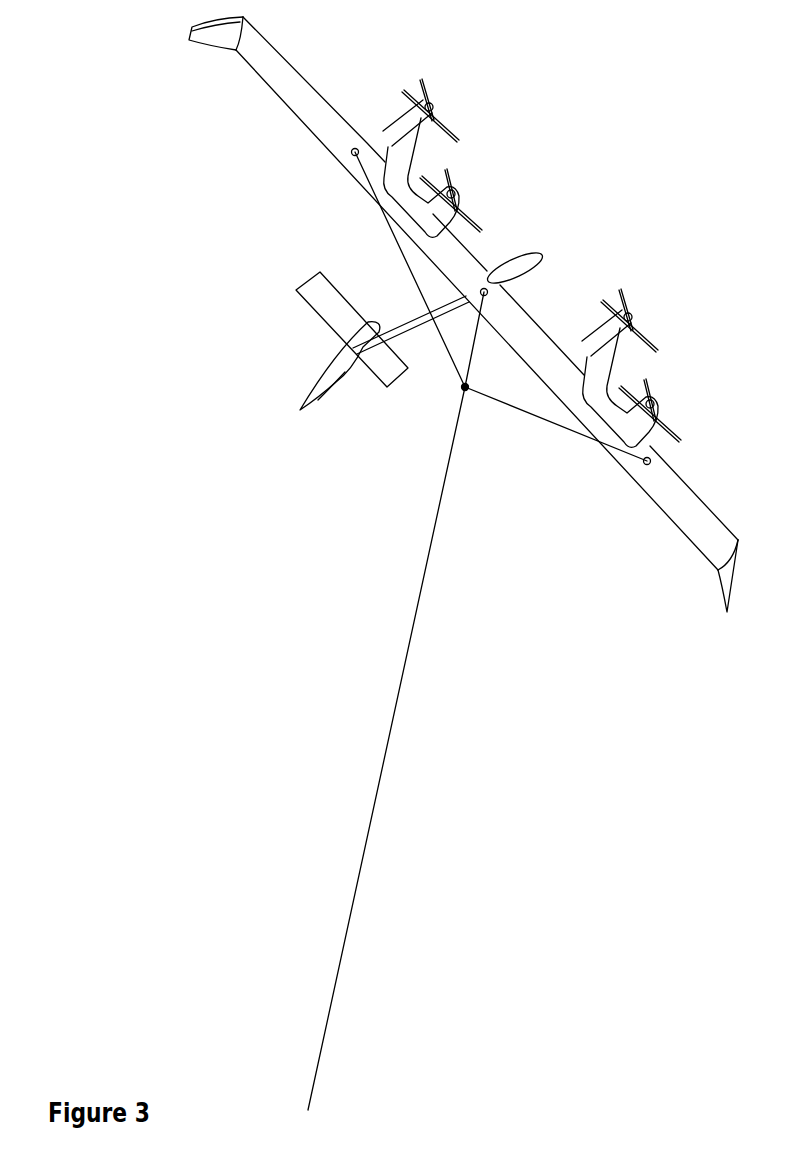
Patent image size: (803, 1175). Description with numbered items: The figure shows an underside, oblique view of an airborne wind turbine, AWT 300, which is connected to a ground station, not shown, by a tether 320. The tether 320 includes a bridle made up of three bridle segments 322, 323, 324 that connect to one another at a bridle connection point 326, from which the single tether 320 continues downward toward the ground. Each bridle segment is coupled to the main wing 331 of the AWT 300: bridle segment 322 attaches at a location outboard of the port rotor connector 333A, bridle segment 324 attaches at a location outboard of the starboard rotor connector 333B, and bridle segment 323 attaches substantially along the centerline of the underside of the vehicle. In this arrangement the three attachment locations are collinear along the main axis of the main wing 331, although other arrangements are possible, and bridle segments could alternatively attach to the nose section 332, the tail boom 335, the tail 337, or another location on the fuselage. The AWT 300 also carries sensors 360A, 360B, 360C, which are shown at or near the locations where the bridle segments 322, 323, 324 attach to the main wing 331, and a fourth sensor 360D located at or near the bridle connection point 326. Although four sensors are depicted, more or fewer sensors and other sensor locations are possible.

The AWT 300 is at (208, 212).
The tether 320 is at (422, 580).
The bridle segment 322 is at (549, 423).
The bridle segment 323 is at (475, 347).
The bridle segment 324 is at (410, 274).
The bridle connection point 326 is at (462, 385).
The main wing 331 is at (292, 101).
The nose section 332 is at (508, 261).
The port rotor connector 333A is at (610, 357).
The starboard rotor connector 333B is at (411, 145).
The tail boom 335 is at (398, 329).
The tail 337 is at (305, 410).
The sensor 360A is at (647, 465).
The sensor 360B is at (488, 293).
The sensor 360C is at (352, 155).
The sensor 360D is at (463, 391).